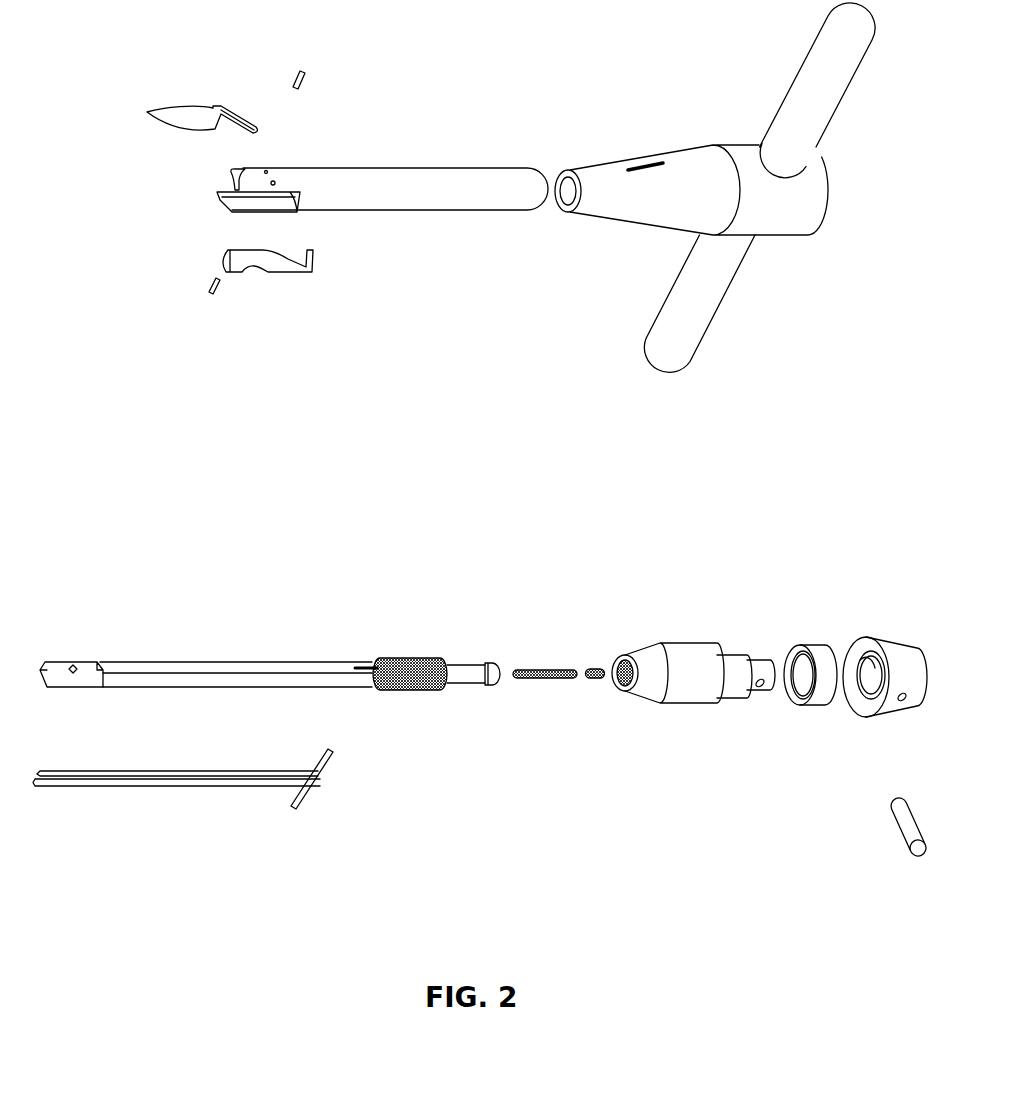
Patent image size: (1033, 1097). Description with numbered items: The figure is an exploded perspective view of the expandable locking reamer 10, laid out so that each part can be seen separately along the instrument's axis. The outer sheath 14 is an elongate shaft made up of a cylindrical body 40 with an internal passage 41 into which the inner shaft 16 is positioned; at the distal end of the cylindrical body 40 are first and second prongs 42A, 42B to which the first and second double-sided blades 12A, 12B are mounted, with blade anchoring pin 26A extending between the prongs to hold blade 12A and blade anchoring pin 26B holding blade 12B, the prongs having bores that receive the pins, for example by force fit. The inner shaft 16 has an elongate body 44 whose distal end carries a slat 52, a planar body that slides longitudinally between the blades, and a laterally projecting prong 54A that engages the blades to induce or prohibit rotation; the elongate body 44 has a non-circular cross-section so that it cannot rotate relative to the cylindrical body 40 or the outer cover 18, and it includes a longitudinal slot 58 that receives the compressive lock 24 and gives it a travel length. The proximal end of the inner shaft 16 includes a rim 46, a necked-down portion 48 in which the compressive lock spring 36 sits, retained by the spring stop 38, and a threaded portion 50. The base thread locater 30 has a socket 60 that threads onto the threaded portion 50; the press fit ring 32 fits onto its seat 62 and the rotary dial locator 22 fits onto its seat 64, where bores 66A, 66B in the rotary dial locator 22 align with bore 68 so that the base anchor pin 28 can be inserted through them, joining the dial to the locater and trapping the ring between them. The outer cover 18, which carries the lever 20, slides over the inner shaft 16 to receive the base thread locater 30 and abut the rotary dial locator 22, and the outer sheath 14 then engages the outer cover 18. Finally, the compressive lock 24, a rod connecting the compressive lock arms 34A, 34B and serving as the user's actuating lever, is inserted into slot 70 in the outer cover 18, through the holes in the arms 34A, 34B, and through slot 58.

The expandable locking reamer 10 is at (477, 105).
The first double-sided blade 12A is at (147, 110).
The second double-sided blade 12B is at (257, 258).
The outer sheath 14 is at (431, 225).
The inner shaft 16 is at (200, 661).
The outer cover 18 is at (807, 213).
The lever 20 is at (692, 333).
The rotary dial locator 22 is at (910, 652).
The compressive lock 24 is at (327, 768).
The blade anchoring pin 26A is at (293, 73).
The blade anchoring pin 26B is at (213, 283).
The base anchor pin 28 is at (905, 830).
The base thread locater 30 is at (687, 700).
The press fit ring 32 is at (798, 688).
The compressive lock arm 34A is at (150, 773).
The compressive lock arm 34B is at (148, 785).
The compressive lock spring 36 is at (547, 682).
The spring stop 38 is at (595, 666).
The cylindrical body 40 is at (497, 200).
The internal passage 41 is at (297, 197).
The first prong 42A is at (237, 173).
The second prong 42B is at (217, 195).
The elongate body 44 is at (307, 663).
The rim 46 is at (493, 663).
The necked-down portion 48 is at (468, 677).
The threaded portion 50 is at (415, 658).
The slat 52 is at (67, 668).
The first prong 54A is at (74, 667).
The slot 58 is at (358, 665).
The socket 60 is at (625, 660).
The seat 62 is at (730, 657).
The seat 64 is at (750, 661).
The bore 66A is at (852, 653).
The bore 66B is at (897, 698).
The bore 68 is at (761, 692).
The slot 70 is at (653, 158).